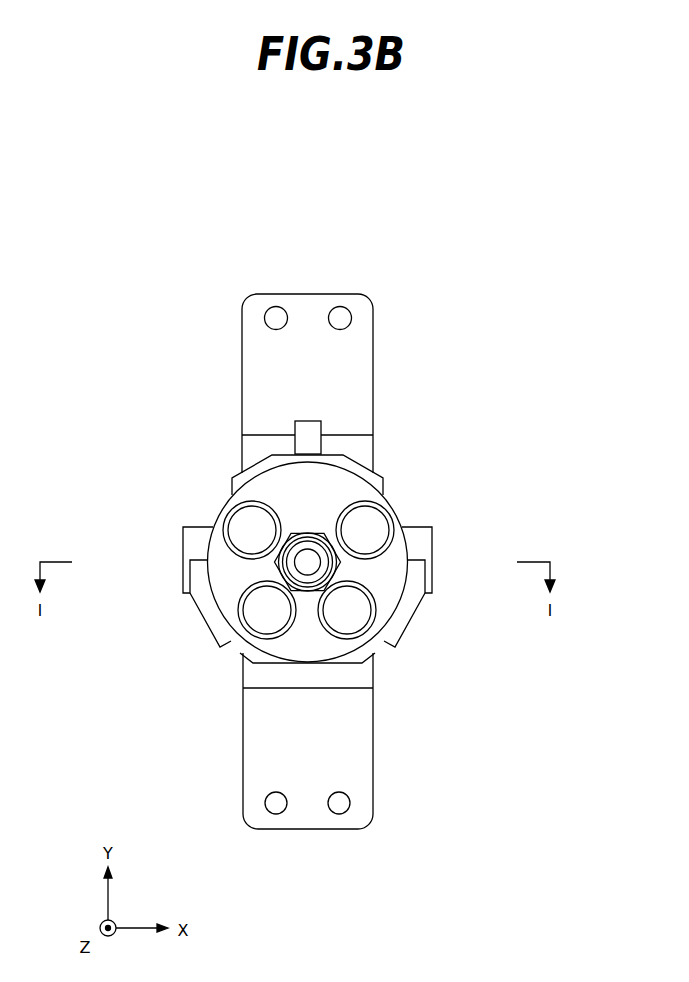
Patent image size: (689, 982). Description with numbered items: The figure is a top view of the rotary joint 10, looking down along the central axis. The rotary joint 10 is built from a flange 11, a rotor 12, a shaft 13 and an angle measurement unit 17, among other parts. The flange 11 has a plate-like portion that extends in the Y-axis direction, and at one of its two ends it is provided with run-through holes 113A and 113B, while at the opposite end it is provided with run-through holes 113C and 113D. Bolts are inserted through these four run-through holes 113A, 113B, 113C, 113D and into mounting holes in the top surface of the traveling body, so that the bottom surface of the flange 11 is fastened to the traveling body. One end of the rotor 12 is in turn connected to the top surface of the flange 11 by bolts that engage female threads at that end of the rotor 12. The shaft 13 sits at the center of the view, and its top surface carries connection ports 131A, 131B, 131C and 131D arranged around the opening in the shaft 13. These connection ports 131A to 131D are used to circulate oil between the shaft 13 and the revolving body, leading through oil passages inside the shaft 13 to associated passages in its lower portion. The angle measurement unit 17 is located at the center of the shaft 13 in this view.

The rotary joint 10 is at (435, 288).
The flange 11 is at (343, 757).
The rotor 12 is at (363, 652).
The shaft 13 is at (387, 573).
The angle measurement unit 17 is at (303, 566).
The run-through hole 113A is at (276, 316).
The run-through hole 113B is at (340, 316).
The run-through hole 113C is at (276, 805).
The run-through hole 113D is at (339, 805).
The connection port 131A is at (268, 612).
The connection port 131B is at (363, 528).
The connection port 131C is at (348, 608).
The connection port 131D is at (252, 528).